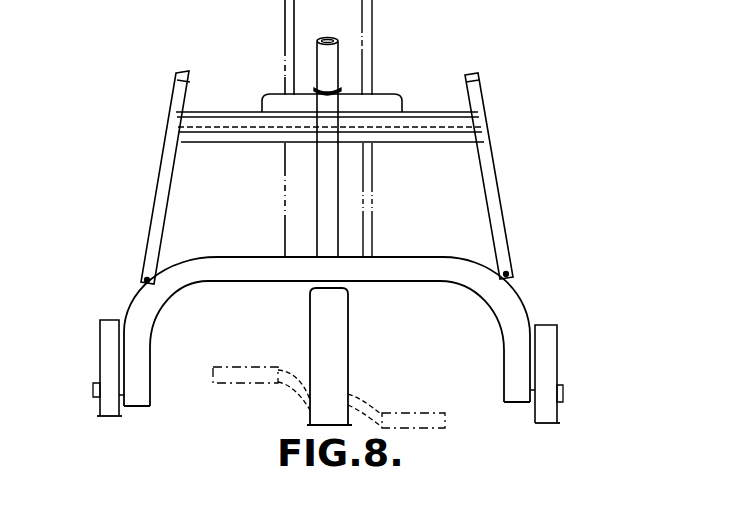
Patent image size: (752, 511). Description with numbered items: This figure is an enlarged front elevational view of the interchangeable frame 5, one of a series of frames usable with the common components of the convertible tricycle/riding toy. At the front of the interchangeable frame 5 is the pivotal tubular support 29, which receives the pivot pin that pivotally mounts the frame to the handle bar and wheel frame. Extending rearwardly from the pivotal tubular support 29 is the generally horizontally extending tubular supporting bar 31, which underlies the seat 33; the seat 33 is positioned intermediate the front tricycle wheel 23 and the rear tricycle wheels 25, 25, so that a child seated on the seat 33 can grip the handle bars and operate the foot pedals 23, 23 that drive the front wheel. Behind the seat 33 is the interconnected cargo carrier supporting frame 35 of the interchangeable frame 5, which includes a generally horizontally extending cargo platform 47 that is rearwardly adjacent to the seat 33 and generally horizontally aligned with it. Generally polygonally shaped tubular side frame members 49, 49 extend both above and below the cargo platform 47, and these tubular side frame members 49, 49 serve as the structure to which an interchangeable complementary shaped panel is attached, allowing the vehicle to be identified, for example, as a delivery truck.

The interchangeable frame 5 is at (563, 141).
The foot pedal 23 is at (350, 383).
The rear tricycle wheel 25 is at (100, 378).
The pivotal tubular support 29 is at (339, 56).
The horizontally extending tubular supporting bar 31 is at (352, 167).
The seat 33 is at (378, 94).
The cargo carrier supporting frame 35 is at (160, 143).
The cargo platform 47 is at (432, 124).
The tubular side frame member 49 is at (177, 100).